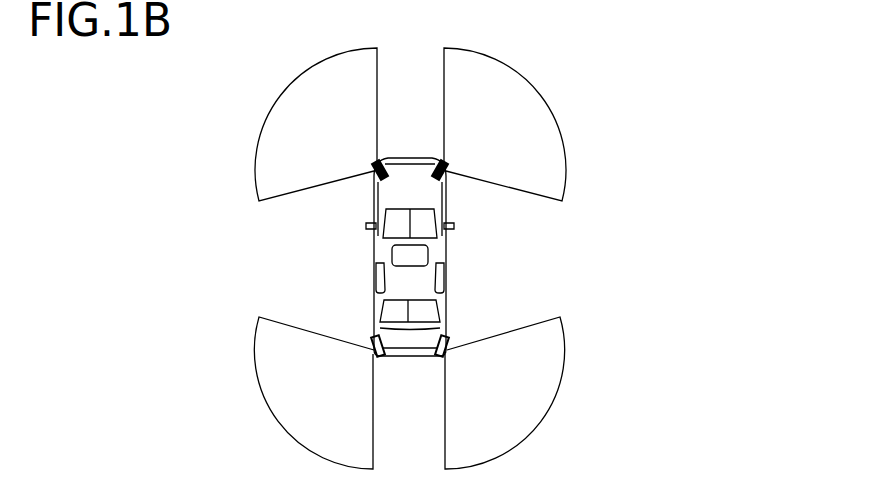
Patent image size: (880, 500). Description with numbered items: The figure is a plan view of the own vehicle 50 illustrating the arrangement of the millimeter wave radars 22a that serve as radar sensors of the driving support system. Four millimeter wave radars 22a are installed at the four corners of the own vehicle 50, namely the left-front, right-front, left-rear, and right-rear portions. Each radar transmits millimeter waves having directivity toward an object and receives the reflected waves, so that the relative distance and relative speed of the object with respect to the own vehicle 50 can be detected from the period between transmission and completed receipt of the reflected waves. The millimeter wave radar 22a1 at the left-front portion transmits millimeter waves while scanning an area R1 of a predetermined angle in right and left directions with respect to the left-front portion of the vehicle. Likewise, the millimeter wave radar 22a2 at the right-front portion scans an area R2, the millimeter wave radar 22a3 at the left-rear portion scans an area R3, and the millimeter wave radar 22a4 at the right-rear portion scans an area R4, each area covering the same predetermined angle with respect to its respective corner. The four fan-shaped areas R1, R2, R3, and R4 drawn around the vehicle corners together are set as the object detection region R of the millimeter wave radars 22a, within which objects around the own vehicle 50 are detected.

The object detection region R is at (508, 370).
The area R1 is at (258, 163).
The area R2 is at (567, 165).
The area R3 is at (255, 347).
The area R4 is at (567, 345).
The millimeter wave radar 22a is at (443, 347).
The millimeter wave radar 22a1 is at (383, 163).
The millimeter wave radar 22a2 is at (441, 163).
The millimeter wave radar 22a3 is at (381, 357).
The millimeter wave radar 22a4 is at (441, 357).
The own vehicle 50 is at (413, 277).